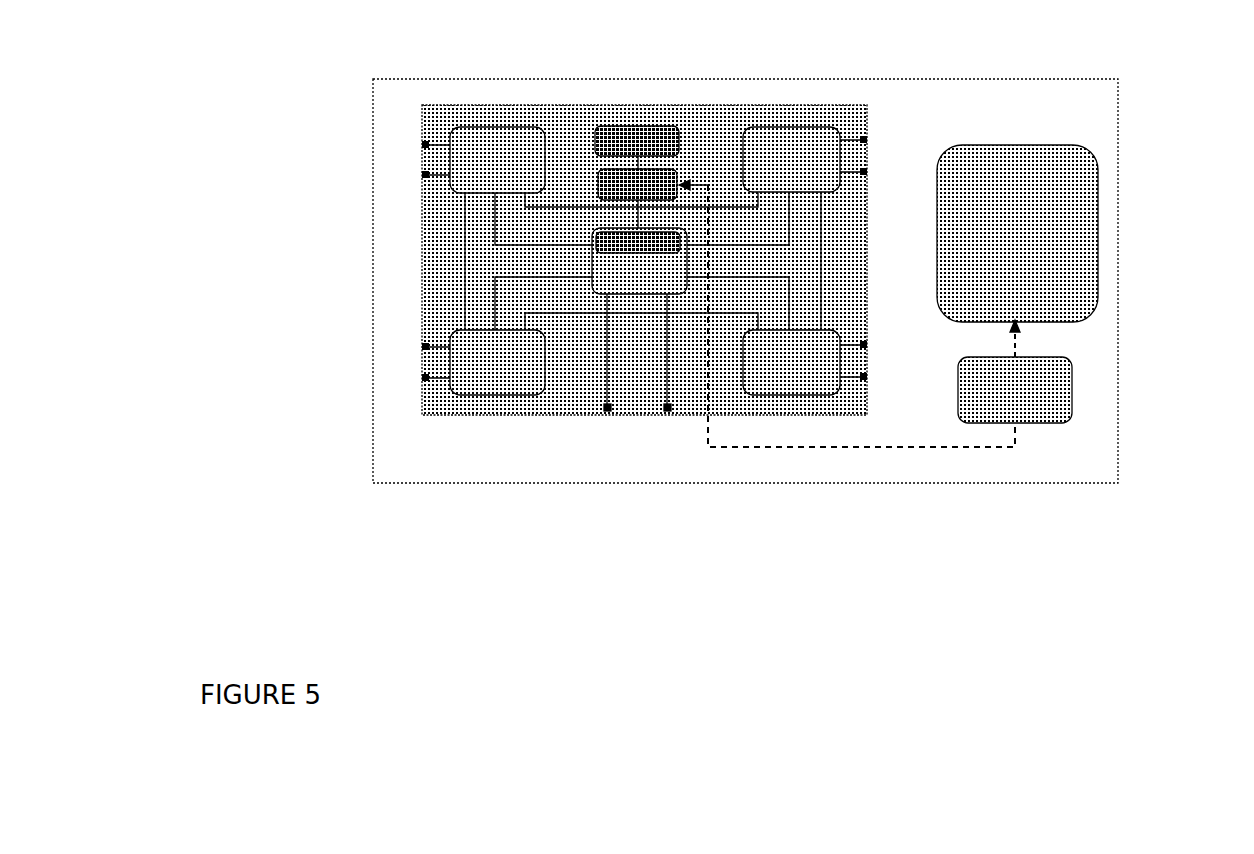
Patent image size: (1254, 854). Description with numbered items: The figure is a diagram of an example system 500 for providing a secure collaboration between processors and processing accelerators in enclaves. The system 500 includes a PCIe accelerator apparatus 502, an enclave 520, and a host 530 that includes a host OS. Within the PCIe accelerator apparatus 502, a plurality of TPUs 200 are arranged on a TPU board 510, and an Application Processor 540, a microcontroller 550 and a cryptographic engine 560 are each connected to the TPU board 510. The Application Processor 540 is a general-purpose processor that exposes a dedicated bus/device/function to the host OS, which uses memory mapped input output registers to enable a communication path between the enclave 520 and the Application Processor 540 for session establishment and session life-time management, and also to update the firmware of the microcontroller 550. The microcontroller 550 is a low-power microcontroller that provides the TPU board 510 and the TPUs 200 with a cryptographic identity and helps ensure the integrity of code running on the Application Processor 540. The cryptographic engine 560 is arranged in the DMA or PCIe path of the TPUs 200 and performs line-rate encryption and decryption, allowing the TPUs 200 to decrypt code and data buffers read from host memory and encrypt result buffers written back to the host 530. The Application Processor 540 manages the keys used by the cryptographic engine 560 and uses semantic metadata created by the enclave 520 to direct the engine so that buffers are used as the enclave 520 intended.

The system 500 is at (1118, 113).
The TPU board 510 is at (422, 220).
The PCIe accelerator apparatus 502 is at (421, 290).
The TPU 200 is at (840, 128).
The Application Processor 540 is at (680, 128).
The microcontroller 550 is at (597, 185).
The cryptographic engine 560 is at (597, 263).
The enclave 520 is at (1098, 240).
The host 530 is at (1072, 390).